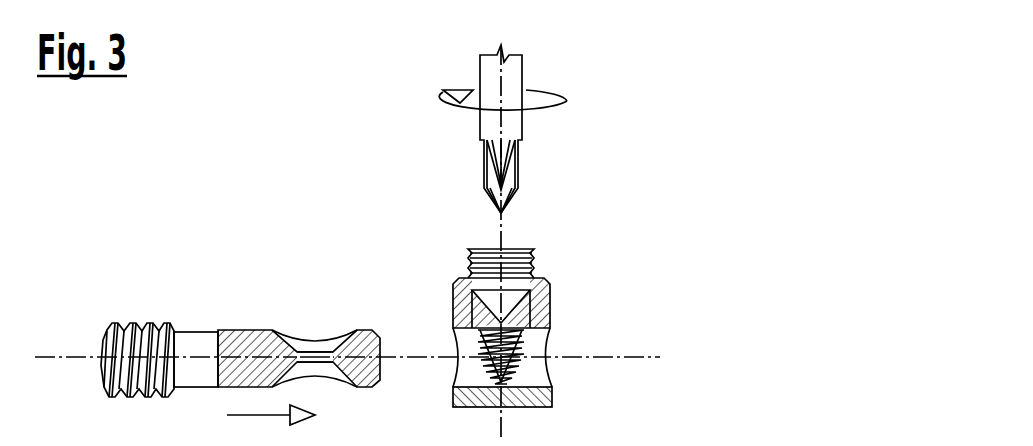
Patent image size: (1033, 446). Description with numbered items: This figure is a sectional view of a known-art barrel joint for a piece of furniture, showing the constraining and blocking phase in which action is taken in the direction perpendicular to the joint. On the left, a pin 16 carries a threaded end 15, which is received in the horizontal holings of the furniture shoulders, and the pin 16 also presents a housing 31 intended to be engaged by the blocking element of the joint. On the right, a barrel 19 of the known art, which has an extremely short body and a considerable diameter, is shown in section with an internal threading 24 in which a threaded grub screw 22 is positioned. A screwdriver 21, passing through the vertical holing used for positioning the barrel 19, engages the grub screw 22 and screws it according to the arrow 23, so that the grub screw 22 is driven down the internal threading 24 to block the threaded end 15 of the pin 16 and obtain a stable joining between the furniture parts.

The threaded end 15 is at (128, 318).
The pin 16 is at (233, 330).
The housing 31 is at (315, 350).
The screwdriver 21 is at (522, 80).
The arrow 23 is at (567, 101).
The threaded grub screw 22 is at (533, 252).
The barrel 19 is at (553, 283).
The internal threading 24 is at (553, 310).